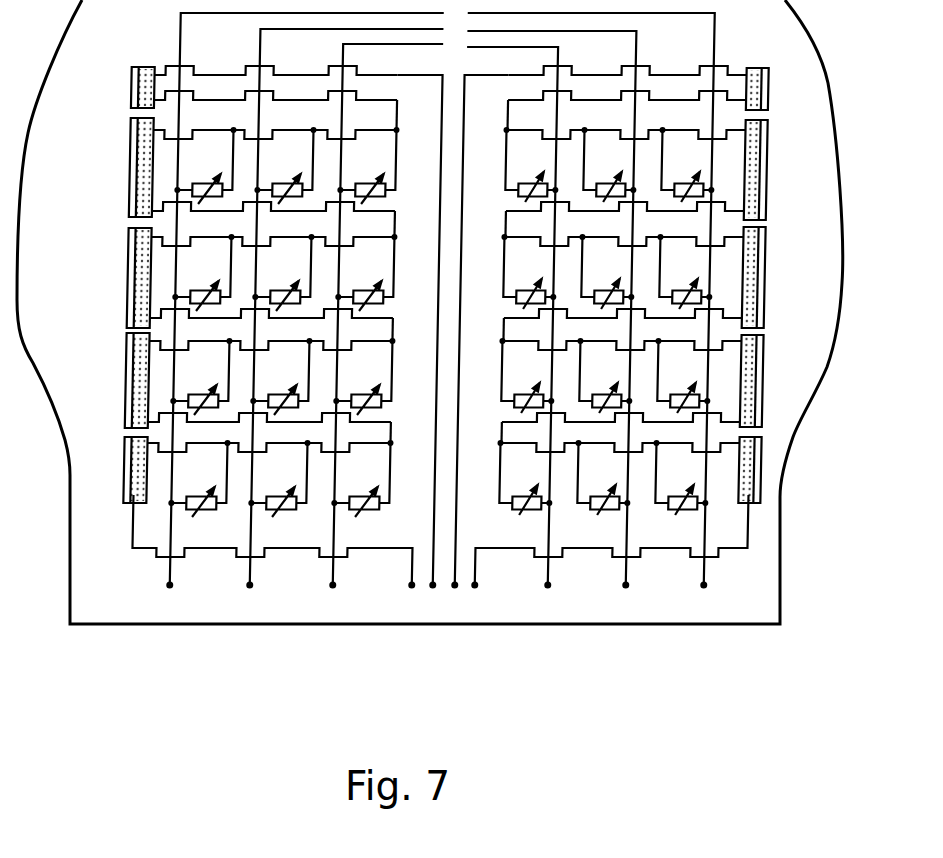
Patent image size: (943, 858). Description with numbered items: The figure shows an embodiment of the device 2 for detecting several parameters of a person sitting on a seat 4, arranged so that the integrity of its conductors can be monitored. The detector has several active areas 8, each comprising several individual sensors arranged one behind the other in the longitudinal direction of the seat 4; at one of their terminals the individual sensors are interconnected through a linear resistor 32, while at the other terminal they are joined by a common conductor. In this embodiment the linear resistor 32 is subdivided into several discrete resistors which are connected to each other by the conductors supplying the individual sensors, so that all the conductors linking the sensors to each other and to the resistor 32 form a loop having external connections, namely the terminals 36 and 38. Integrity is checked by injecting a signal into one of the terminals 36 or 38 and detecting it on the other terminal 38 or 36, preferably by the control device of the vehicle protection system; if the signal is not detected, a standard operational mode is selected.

The device 2 is at (445, 312).
The seat 4 is at (822, 287).
The active areas 8 is at (304, 356).
The linear resistor 32 is at (96, 336).
The terminal 36 is at (413, 590).
The terminal 38 is at (434, 590).